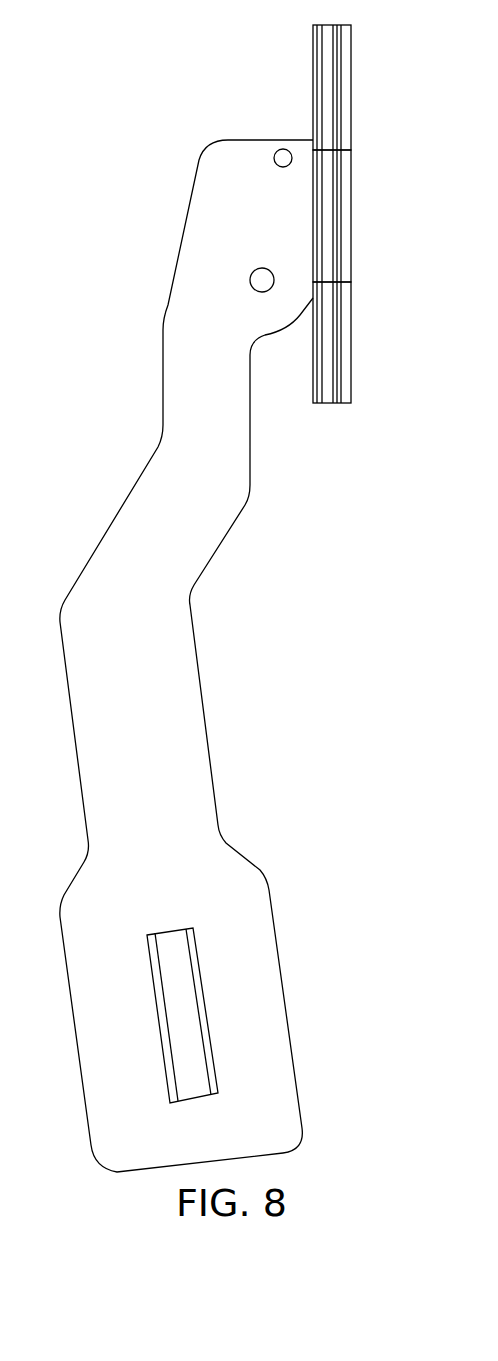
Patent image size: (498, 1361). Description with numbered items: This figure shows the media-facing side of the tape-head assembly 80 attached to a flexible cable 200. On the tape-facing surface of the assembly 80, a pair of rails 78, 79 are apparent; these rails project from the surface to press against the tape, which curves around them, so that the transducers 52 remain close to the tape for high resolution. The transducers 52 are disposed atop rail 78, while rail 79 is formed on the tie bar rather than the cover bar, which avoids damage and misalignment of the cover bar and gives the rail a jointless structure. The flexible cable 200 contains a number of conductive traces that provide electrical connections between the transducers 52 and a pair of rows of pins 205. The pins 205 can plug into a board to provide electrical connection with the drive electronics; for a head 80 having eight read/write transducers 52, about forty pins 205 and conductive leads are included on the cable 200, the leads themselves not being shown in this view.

The tape-head assembly 80 is at (300, 214).
The rail 79 is at (320, 55).
The transducers 52 is at (338, 249).
The rail 78 is at (340, 360).
The flexible cable 200 is at (112, 520).
The pins 205 is at (172, 1065).